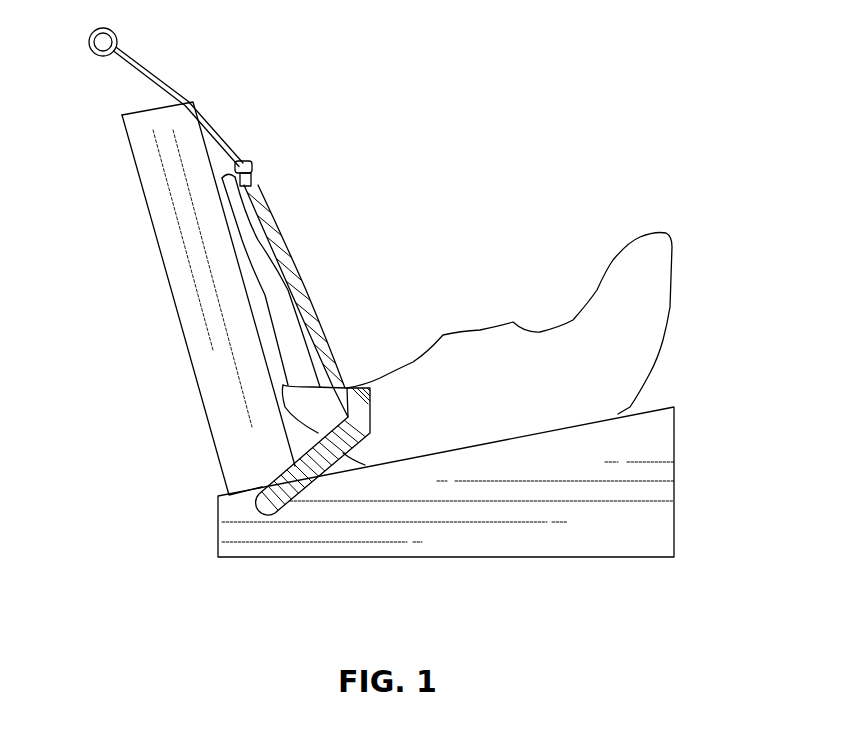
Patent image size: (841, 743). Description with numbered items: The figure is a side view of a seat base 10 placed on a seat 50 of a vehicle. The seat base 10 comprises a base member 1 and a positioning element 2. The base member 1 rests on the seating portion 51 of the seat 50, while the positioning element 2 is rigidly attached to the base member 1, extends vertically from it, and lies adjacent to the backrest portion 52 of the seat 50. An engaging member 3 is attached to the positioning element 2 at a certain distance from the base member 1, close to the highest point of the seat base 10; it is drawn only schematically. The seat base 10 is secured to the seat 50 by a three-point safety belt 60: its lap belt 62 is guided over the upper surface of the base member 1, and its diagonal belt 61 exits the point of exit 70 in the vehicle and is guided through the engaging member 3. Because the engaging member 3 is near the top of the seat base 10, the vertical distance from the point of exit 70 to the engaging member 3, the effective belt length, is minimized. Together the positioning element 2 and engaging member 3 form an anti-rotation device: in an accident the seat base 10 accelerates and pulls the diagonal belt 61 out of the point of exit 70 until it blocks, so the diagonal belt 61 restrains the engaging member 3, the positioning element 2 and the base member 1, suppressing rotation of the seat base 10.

The base member 1 is at (658, 321).
The positioning element 2 is at (248, 241).
The engaging member 3 is at (243, 175).
The seat base 10 is at (498, 305).
The seat 50 is at (207, 298).
The seating portion 51 is at (665, 503).
The backrest portion 52 is at (182, 318).
The safety belt 60 is at (320, 325).
The diagonal belt 61 is at (213, 125).
The lap belt 62 is at (287, 471).
The point of exit 70 is at (89, 44).